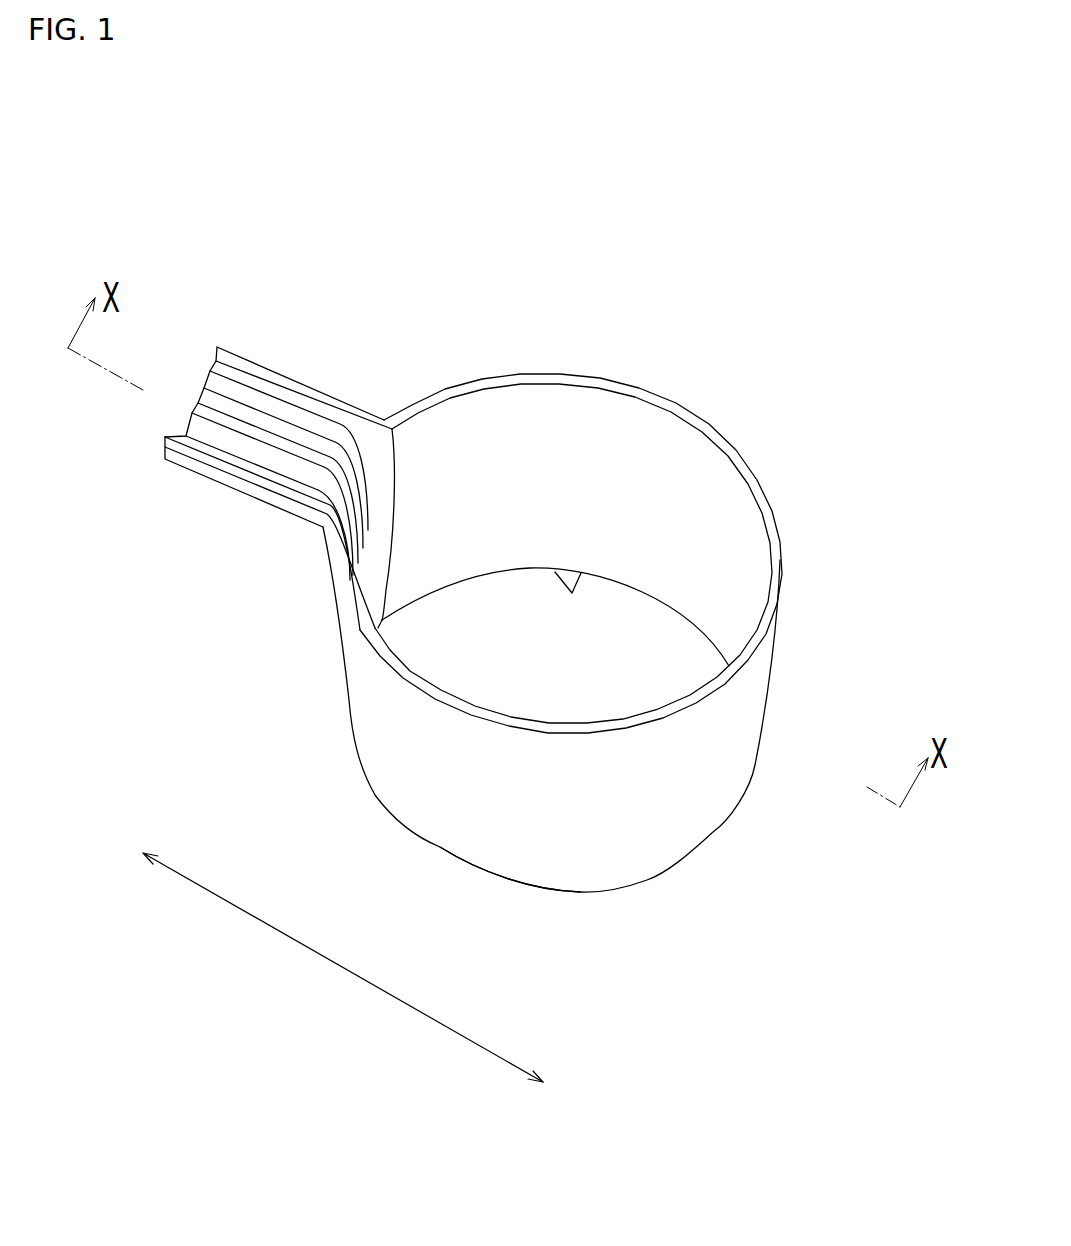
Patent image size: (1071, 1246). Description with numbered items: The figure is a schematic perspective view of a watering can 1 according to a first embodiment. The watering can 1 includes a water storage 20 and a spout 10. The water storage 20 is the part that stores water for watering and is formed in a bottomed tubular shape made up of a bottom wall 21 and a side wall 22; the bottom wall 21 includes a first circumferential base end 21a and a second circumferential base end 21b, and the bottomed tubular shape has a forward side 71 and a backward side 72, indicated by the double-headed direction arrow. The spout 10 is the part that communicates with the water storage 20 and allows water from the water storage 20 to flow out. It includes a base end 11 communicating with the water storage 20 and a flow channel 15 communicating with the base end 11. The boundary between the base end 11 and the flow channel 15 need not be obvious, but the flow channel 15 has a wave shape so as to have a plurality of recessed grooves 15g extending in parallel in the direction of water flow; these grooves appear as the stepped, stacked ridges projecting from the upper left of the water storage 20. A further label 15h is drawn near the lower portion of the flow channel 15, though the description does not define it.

The watering can 1 is at (716, 366).
The spout 10 is at (470, 293).
The base end 11 is at (379, 577).
The flow channel 15 is at (305, 397).
The recessed grooves 15g is at (190, 384).
The lower shell portion 15h is at (183, 428).
The water storage 20 is at (790, 494).
The bottom wall 21 is at (585, 803).
The first circumferential base end 21a is at (573, 592).
The second circumferential base end 21b is at (378, 628).
The side wall 22 is at (493, 782).
The forward side 71 is at (322, 951).
The backward side 72 is at (560, 1095).